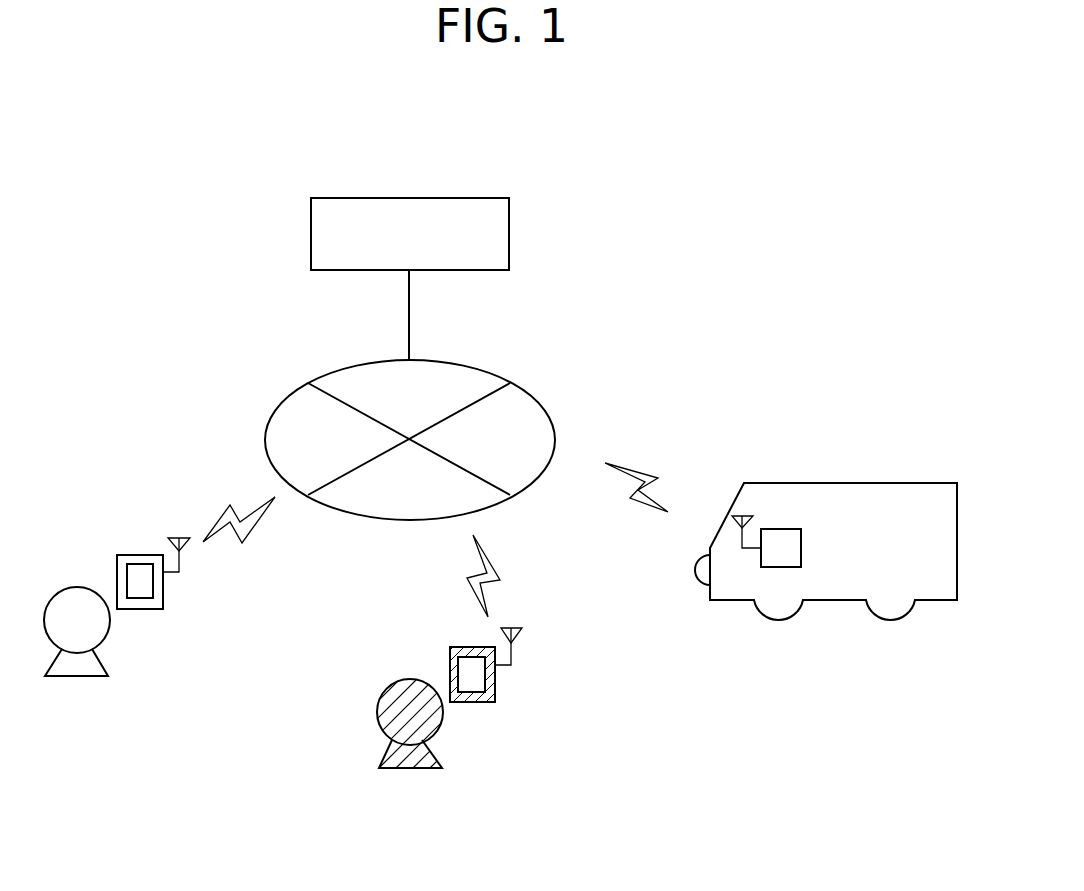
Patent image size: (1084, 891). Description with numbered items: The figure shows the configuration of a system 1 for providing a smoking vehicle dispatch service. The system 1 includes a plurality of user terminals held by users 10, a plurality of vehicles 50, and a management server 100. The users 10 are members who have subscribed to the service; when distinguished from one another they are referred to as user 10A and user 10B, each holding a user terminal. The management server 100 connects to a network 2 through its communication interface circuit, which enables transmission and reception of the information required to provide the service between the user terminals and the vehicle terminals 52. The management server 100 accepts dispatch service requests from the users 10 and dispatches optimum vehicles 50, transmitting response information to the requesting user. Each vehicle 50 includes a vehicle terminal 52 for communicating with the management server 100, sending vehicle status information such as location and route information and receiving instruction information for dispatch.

The system 1 is at (464, 864).
The management server 100 is at (472, 198).
The network 2 is at (478, 368).
The users 10 is at (281, 677).
The user 10A is at (77, 678).
The user 10B is at (380, 710).
The vehicle 50 is at (826, 511).
The vehicle terminal 52 is at (780, 529).